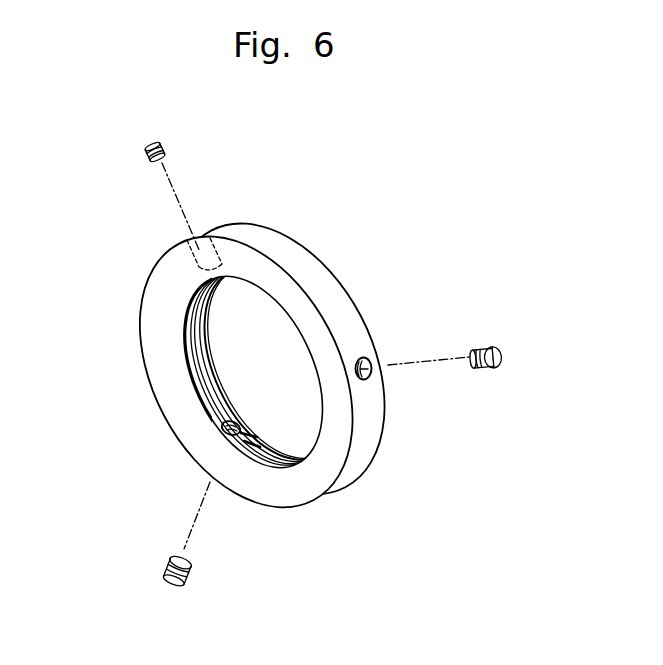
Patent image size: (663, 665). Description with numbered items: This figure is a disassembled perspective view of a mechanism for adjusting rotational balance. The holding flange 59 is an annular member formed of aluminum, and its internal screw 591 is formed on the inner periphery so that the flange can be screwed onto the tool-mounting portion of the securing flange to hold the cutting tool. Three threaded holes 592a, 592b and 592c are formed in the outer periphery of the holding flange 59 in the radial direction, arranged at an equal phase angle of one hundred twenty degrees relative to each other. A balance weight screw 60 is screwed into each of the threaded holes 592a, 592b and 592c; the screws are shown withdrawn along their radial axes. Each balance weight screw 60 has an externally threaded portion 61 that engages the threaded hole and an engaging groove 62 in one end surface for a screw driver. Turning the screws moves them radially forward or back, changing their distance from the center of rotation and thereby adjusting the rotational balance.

The holding flange 59 is at (262, 335).
The internal screw 591 is at (184, 363).
The threaded hole 592a is at (200, 268).
The threaded hole 592b is at (372, 376).
The threaded hole 592c is at (213, 414).
The balance weight screw 60 is at (135, 150).
The externally threaded portion 61 is at (158, 143).
The engaging groove 62 is at (506, 366).